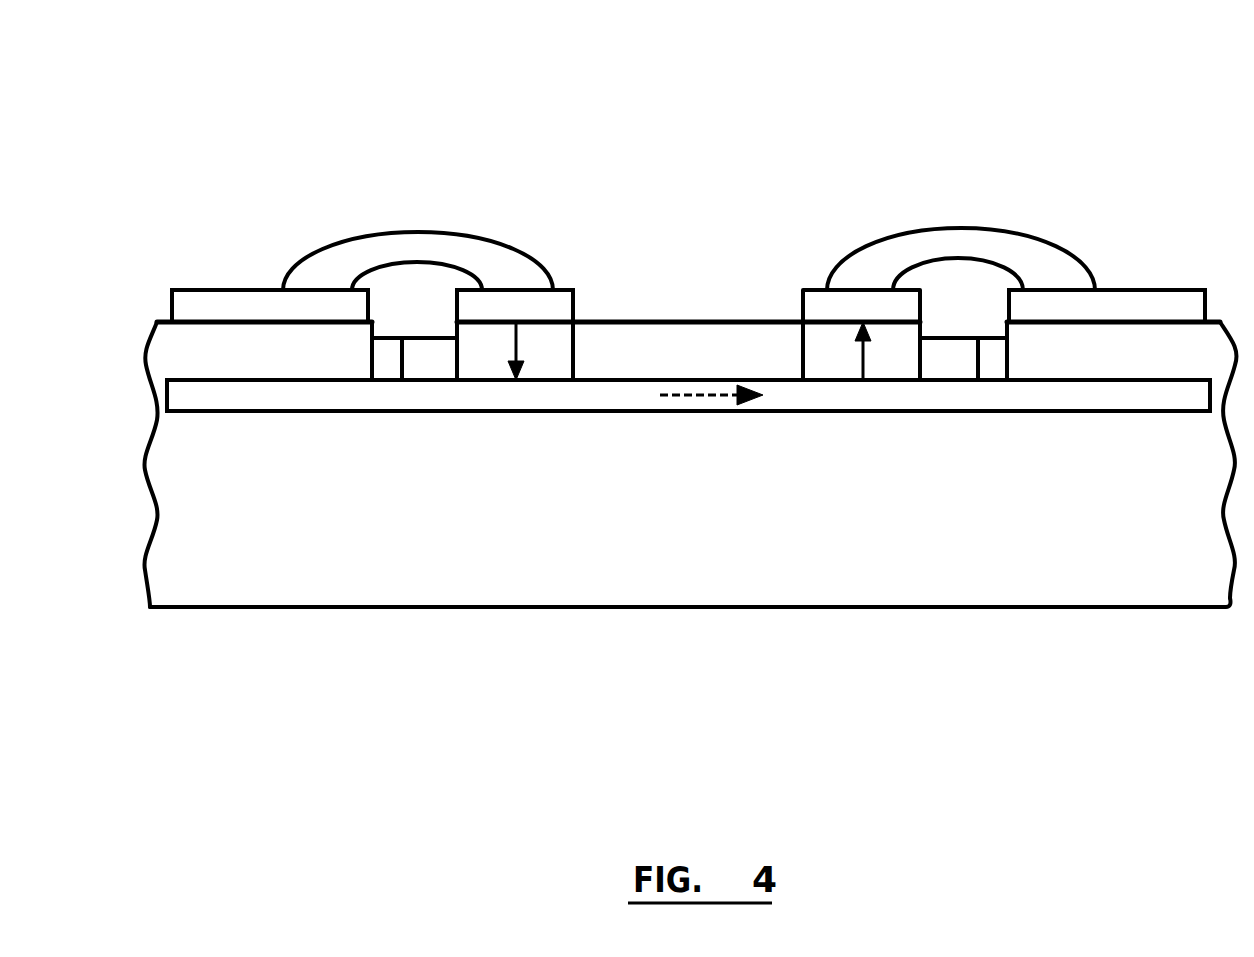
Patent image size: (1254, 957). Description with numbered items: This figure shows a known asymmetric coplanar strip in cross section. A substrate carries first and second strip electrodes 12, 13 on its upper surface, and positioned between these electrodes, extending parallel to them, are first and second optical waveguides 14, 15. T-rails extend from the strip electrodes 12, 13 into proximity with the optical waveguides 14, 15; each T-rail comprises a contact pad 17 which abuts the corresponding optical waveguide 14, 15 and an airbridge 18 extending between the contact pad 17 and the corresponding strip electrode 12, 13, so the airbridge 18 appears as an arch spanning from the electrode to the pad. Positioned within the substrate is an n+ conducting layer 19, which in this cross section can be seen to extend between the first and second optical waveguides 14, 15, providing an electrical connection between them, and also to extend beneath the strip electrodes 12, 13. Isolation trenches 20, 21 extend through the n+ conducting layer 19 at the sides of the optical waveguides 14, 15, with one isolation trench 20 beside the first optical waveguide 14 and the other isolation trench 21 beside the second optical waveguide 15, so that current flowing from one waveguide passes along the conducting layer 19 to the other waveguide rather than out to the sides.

The first strip electrode 12 is at (198, 290).
The second strip electrode 13 is at (1182, 290).
The first optical waveguide 14 is at (488, 364).
The second optical waveguide 15 is at (887, 357).
The contact pad 17 is at (565, 290).
The airbridge 18 is at (392, 245).
The n+ conducting layer 19 is at (788, 397).
The isolation trench 20 is at (385, 359).
The isolation trench 21 is at (990, 355).